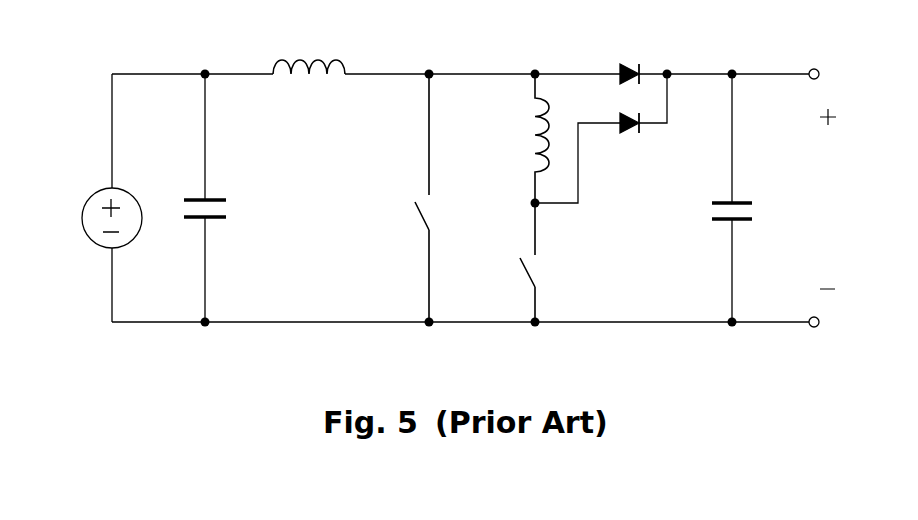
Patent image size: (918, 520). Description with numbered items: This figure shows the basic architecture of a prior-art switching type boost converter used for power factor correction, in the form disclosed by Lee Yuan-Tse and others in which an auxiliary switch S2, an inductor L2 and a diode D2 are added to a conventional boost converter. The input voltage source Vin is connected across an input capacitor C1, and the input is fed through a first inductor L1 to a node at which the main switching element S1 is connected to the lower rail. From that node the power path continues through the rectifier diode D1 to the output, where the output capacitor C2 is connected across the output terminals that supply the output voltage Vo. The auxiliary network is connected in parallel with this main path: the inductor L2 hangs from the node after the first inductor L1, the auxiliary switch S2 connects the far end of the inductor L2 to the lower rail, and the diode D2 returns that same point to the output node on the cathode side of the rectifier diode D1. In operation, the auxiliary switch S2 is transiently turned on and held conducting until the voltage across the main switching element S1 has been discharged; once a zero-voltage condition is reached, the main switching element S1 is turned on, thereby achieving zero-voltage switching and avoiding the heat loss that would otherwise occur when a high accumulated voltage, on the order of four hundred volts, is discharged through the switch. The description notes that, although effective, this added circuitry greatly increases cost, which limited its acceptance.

The input voltage source Vin is at (88, 218).
The input capacitor C1 is at (226, 198).
The first inductor L1 is at (309, 51).
The switching element S1 is at (443, 198).
The inductor L2 is at (551, 138).
The auxiliary switch S2 is at (506, 262).
The rectifier diode D1 is at (630, 55).
The diode D2 is at (640, 127).
The output capacitor C2 is at (707, 198).
The output voltage Vo is at (830, 216).